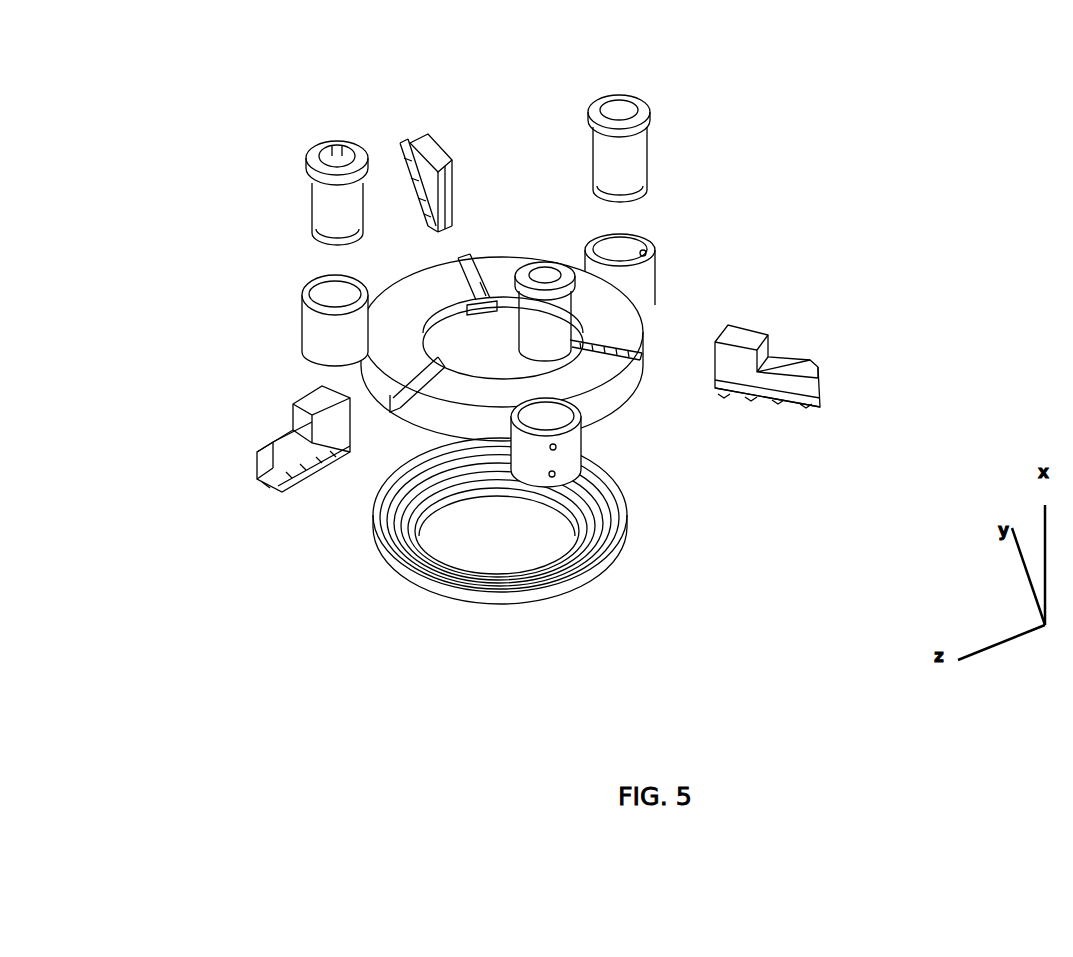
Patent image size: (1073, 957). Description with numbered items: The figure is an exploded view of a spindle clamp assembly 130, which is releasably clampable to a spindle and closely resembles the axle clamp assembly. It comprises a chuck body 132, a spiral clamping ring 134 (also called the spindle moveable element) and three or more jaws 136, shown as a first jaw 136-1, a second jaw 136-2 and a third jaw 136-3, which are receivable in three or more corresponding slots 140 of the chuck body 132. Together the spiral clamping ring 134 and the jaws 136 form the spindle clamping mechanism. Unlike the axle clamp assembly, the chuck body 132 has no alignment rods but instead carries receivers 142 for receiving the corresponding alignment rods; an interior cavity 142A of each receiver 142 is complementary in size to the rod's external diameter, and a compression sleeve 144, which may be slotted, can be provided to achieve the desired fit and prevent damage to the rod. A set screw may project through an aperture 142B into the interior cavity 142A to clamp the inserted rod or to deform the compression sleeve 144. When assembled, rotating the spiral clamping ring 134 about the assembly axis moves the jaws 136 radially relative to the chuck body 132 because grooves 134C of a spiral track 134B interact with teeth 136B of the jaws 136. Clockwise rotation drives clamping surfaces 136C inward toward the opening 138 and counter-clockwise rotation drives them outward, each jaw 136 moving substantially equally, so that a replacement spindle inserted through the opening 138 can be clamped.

The spindle clamp assembly 130 is at (245, 203).
The chuck body 132 is at (592, 404).
The spiral clamping ring 134 is at (603, 532).
The spiral track 134B is at (473, 583).
The grooves 134C is at (547, 572).
The jaws 136 is at (577, 254).
The first jaw 136-1 is at (297, 452).
The second jaw 136-2 is at (810, 367).
The third jaw 136-3 is at (412, 145).
The teeth 136B is at (788, 405).
The clamping surfaces 136C is at (447, 207).
The opening 138 is at (472, 348).
The slots 140 is at (440, 368).
The receivers 142 is at (310, 312).
The interior cavity 142A is at (616, 249).
The aperture 142B is at (553, 473).
The compression sleeve 144 is at (633, 143).